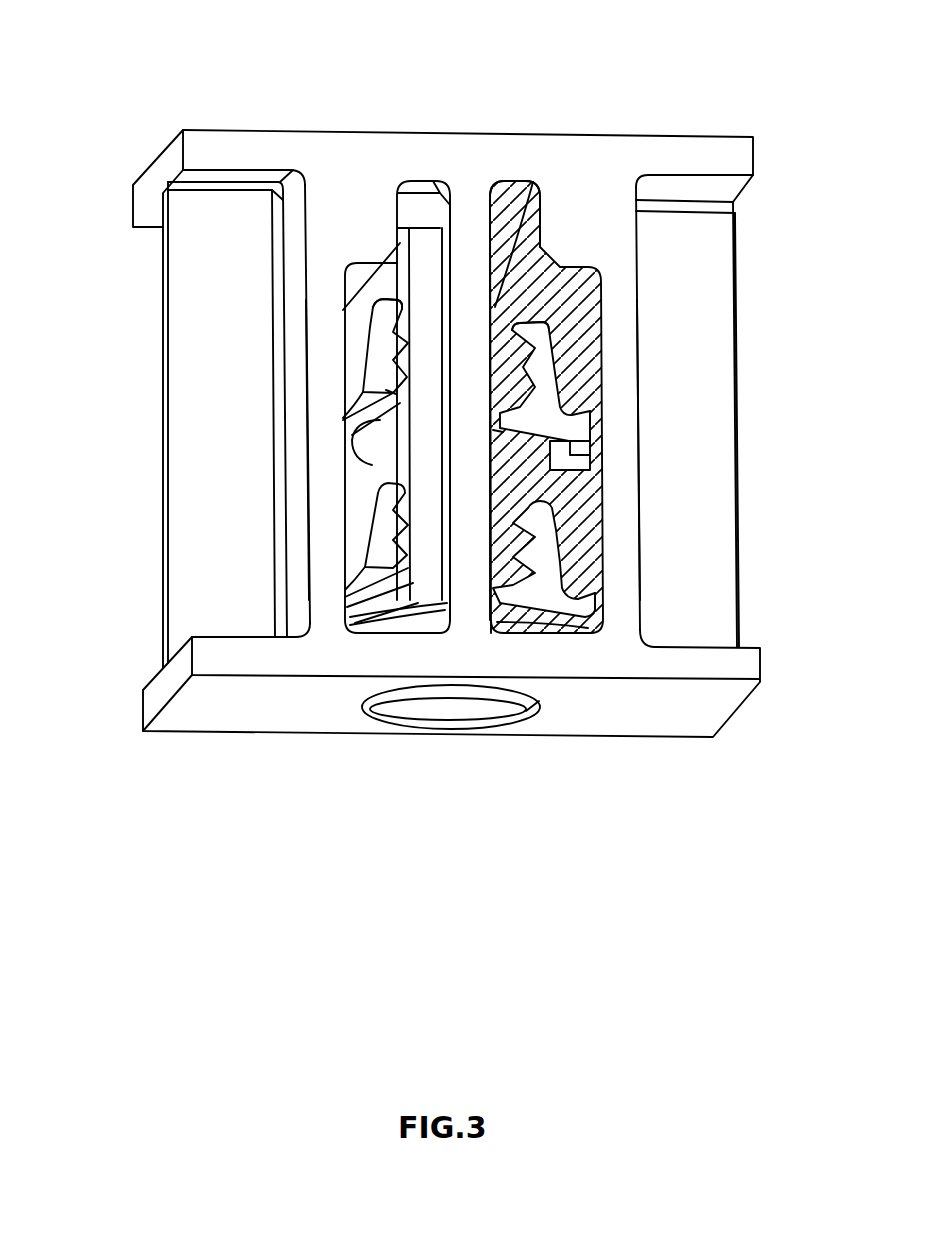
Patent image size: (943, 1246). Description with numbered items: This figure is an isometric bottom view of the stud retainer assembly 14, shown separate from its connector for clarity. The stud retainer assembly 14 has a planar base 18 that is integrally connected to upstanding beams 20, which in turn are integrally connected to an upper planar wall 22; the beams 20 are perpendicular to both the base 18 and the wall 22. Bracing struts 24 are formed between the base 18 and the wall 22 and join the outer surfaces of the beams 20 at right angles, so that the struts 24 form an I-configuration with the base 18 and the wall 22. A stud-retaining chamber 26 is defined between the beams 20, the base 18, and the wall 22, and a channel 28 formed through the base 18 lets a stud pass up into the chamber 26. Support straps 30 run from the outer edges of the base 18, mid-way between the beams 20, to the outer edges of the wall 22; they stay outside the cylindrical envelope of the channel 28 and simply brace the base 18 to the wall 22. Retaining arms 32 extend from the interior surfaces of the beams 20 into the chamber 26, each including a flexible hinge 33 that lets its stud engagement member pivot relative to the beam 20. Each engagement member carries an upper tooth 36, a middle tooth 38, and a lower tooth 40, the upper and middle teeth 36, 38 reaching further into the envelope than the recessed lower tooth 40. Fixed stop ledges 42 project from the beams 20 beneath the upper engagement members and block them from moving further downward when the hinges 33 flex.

The stud retainer assembly 14 is at (168, 112).
The planar base 18 is at (478, 705).
The upstanding beams 20 is at (305, 563).
The upper planar wall 22 is at (703, 137).
The bracing struts 24 is at (163, 365).
The stud-retaining chamber 26 is at (534, 194).
The channel 28 is at (467, 700).
The support straps 30 is at (473, 220).
The retaining arms 32 is at (372, 338).
The hinge 33 is at (365, 390).
The upper tooth 36 is at (397, 310).
The middle tooth 38 is at (403, 337).
The lower tooth 40 is at (395, 393).
The fixed stop ledges 42 is at (358, 450).